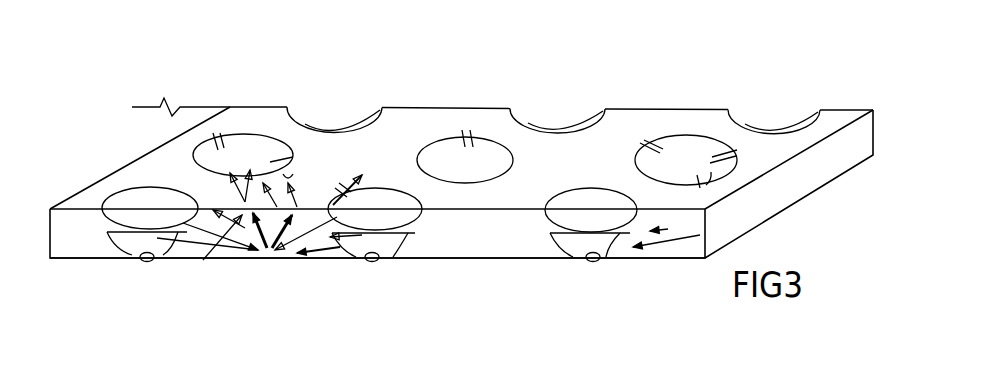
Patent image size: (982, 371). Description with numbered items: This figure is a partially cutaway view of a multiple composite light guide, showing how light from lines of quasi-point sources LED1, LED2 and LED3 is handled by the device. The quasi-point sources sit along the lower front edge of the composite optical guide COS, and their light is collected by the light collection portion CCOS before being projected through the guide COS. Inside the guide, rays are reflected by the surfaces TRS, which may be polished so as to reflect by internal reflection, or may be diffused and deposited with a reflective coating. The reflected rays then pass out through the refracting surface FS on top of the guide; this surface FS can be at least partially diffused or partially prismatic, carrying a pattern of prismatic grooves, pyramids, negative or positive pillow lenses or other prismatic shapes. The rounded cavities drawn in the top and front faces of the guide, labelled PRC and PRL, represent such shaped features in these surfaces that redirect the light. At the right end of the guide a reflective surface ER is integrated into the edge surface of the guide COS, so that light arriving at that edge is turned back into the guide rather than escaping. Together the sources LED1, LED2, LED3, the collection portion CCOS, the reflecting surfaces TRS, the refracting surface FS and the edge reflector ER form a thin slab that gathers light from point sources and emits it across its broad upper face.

The composite optical guide COS is at (662, 110).
The light collection portion of COS CCOS is at (476, 101).
The refracting surface FS is at (683, 123).
The prismatic reflective cavities PRC is at (167, 200).
The prismatic reflective notch PRL is at (527, 122).
The reflecting surface TRS is at (240, 258).
The first light emitting diode LED1 is at (143, 263).
The quasi-point source LED2 is at (371, 263).
The third light emitting diode LED3 is at (594, 263).
The reflective surface ER is at (702, 237).